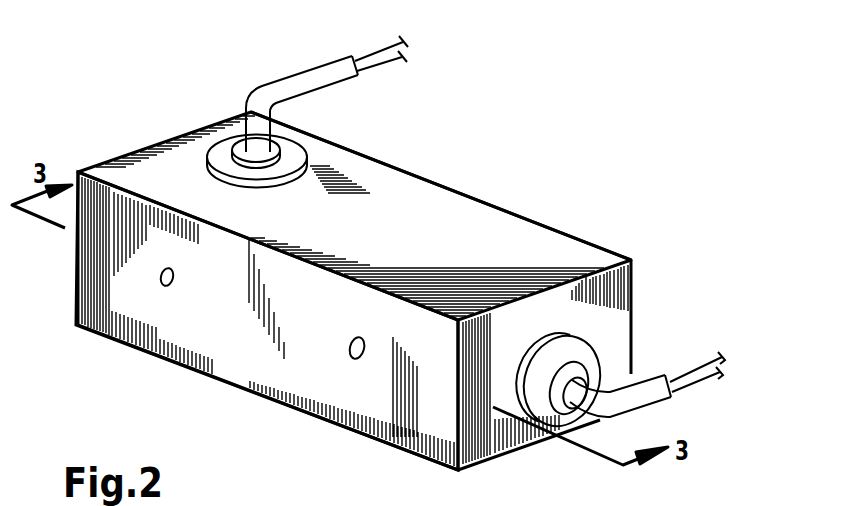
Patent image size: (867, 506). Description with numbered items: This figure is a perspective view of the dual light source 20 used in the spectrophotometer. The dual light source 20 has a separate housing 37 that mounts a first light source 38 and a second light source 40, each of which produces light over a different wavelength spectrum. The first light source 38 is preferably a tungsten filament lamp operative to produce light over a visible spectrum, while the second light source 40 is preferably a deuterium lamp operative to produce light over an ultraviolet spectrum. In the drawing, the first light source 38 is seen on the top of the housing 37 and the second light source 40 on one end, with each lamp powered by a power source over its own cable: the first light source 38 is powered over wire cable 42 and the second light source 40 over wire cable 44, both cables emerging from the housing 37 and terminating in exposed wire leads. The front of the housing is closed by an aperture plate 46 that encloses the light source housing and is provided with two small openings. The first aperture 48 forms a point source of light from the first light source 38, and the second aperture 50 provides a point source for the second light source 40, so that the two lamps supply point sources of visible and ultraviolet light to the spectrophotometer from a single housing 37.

The dual light source 20 is at (531, 149).
The housing 37 is at (582, 244).
The first light source 38 is at (320, 145).
The second light source 40 is at (594, 326).
The wire cable 42 is at (297, 80).
The wire cable 44 is at (656, 397).
The aperture plate 46 is at (385, 432).
The first aperture 48 is at (150, 286).
The second aperture 50 is at (345, 358).